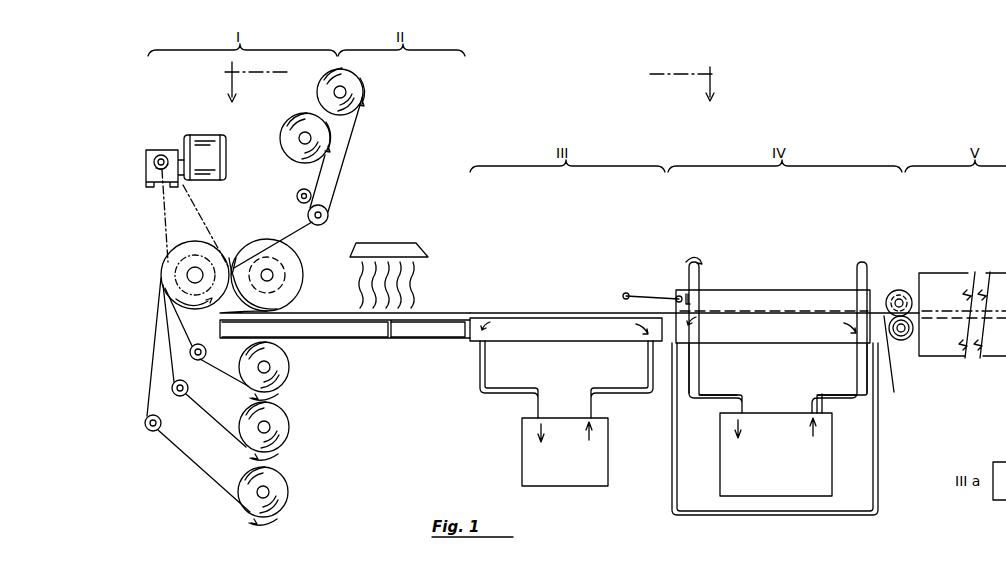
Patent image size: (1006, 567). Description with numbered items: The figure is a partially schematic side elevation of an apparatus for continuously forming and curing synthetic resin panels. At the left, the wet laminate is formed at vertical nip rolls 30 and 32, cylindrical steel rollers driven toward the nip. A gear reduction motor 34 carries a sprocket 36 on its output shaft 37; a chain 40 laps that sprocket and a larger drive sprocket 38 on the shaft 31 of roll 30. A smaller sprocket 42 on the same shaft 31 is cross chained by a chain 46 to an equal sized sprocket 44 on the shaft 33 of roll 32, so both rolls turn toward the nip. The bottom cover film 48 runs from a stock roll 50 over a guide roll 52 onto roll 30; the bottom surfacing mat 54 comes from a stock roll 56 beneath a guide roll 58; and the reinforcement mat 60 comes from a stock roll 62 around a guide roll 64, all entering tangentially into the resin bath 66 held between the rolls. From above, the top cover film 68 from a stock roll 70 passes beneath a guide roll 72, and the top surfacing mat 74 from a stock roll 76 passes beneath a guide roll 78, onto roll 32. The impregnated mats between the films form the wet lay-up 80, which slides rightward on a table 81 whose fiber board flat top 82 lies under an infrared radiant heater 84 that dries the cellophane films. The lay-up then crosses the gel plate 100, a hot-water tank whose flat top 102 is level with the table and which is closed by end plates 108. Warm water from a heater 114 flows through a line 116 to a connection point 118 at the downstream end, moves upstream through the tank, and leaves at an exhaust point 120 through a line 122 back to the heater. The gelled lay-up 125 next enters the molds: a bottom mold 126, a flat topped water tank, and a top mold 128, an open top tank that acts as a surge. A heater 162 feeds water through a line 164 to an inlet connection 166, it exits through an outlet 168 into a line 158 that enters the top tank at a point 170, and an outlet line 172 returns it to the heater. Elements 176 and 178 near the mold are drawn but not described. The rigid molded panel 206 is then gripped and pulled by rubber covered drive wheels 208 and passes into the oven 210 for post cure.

The nip roll 30 is at (182, 317).
The shaft 31 is at (194, 243).
The nip roll 32 is at (295, 271).
The shaft 33 is at (273, 275).
The gear reduction motor 34 is at (220, 134).
The sprocket 36 is at (168, 134).
The output shaft 37 is at (156, 152).
The drive sprocket 38 is at (164, 260).
The chain 40 is at (156, 216).
The sprocket 42 is at (176, 274).
The sprocket 44 is at (288, 256).
The cross chain 46 is at (232, 262).
The bottom cover film 48 is at (224, 376).
The stock roll 50 is at (289, 376).
The guide roll 52 is at (206, 354).
The bottom surfacing mat 54 is at (228, 434).
The stock roll 56 is at (289, 436).
The guide roll 58 is at (187, 389).
The reinforcement mat 60 is at (198, 484).
The stock roll 62 is at (289, 500).
The guide roll 64 is at (160, 425).
The resin bath 66 is at (252, 214).
The top cover film 68 is at (352, 150).
The stock roll 70 is at (318, 92).
The guide roll 72 is at (332, 212).
The top surfacing mat 74 is at (302, 174).
The stock roll 76 is at (294, 114).
The guide roll 78 is at (298, 194).
The wet lay-up 80 is at (298, 298).
The table 81 is at (416, 345).
The flat top 82 is at (388, 340).
The infrared radiant heater 84 is at (408, 244).
The gel plate 100 is at (553, 246).
The flat top 102 is at (540, 317).
The end plates 108 is at (457, 338).
The heater 114 is at (522, 448).
The line 116 is at (628, 388).
The connection point 118 is at (648, 346).
The water exhaust point 120 is at (484, 348).
The line 122 is at (490, 388).
The gel lay-up 125 is at (652, 309).
The bottom mold 126 is at (748, 362).
The top mold 128 is at (784, 249).
The inlet line 158 is at (698, 520).
The heater 162 is at (842, 444).
The line 164 is at (824, 388).
The inlet connection 166 is at (846, 348).
The outlet 168 is at (688, 348).
The entrance point 170 is at (855, 276).
The outlet line 172 is at (700, 272).
The sensor 176 is at (666, 294).
The sensor 178 is at (624, 292).
The molded panel 206 is at (905, 357).
The drive wheels 208 is at (888, 288).
The oven 210 is at (986, 368).